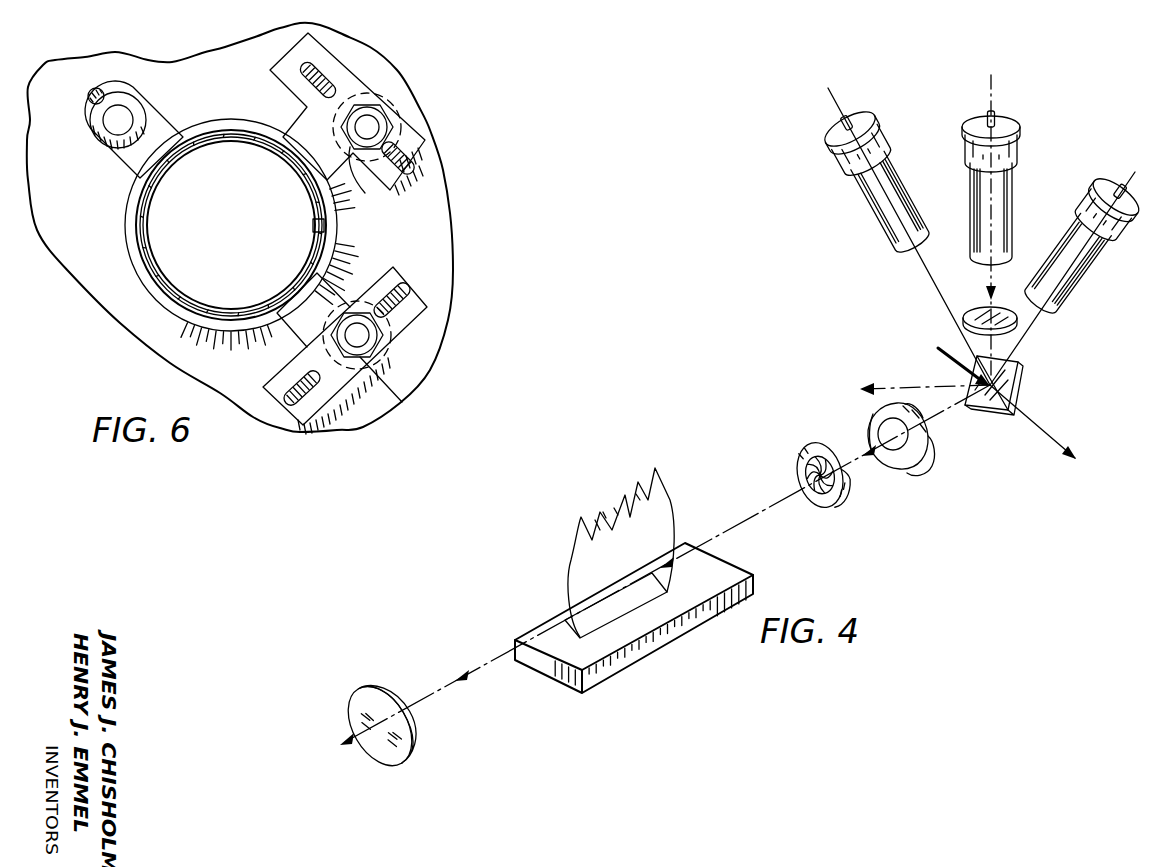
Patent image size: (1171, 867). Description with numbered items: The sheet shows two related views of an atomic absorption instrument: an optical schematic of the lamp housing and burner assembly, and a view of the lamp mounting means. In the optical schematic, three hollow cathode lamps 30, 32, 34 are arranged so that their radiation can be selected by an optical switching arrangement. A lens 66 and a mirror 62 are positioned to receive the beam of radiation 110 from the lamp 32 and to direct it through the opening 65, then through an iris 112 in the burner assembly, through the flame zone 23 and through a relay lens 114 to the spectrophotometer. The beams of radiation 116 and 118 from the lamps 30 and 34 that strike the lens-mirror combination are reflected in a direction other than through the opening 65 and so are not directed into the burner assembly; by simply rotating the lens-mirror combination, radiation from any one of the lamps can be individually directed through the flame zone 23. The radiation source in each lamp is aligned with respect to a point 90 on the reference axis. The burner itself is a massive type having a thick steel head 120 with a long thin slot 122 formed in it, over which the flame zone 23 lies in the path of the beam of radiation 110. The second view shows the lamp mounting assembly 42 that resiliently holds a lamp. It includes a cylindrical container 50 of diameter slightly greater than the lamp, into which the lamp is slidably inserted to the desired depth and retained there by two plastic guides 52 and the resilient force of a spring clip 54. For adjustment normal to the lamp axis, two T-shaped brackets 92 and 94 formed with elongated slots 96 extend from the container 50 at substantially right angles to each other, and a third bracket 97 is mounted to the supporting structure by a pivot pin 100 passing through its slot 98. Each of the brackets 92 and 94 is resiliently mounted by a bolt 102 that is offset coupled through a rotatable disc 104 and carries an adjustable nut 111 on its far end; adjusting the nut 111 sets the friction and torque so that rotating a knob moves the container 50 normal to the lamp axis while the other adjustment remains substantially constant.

In FIG. 4, the flame zone 23 is at (658, 486).
In FIG. 6, the hollow cathode lamp 30 is at (152, 238).
In FIG. 4, the hollow cathode lamp 30 is at (1087, 273).
In FIG. 4, the hollow cathode lamp 32 is at (1012, 180).
In FIG. 4, the hollow cathode lamp 34 is at (870, 212).
In FIG. 6, the lamp mounting assembly 42 is at (126, 240).
In FIG. 6, the cylindrical container 50 is at (187, 307).
In FIG. 6, the plastic guides 52 is at (194, 145).
In FIG. 6, the spring clip 54 is at (312, 228).
In FIG. 4, the mirror 62 is at (1013, 388).
In FIG. 4, the opening 65 is at (897, 467).
In FIG. 4, the lens 66 is at (968, 303).
In FIG. 4, the position or point 90 is at (951, 362).
In FIG. 6, the T-shaped bracket 92 is at (423, 135).
In FIG. 6, the T-shaped bracket 94 is at (280, 397).
In FIG. 6, the elongated slots 96 is at (313, 78).
In FIG. 6, the bracket 97 is at (118, 79).
In FIG. 6, the slot 98 is at (140, 155).
In FIG. 6, the pivot pin 100 is at (110, 122).
In FIG. 6, the bolt 102 is at (380, 112).
In FIG. 6, the rotatable disc 104 is at (383, 87).
In FIG. 4, the beam of radiation 110 is at (991, 273).
In FIG. 6, the adjustable nut 111 is at (394, 281).
In FIG. 4, the iris 112 is at (837, 507).
In FIG. 4, the relay lens 114 is at (380, 692).
In FIG. 4, the beam of radiation 116 is at (1013, 352).
In FIG. 4, the beam of radiation 118 is at (937, 293).
In FIG. 4, the thick steel head 120 is at (613, 677).
In FIG. 4, the long thin slot 122 is at (633, 610).